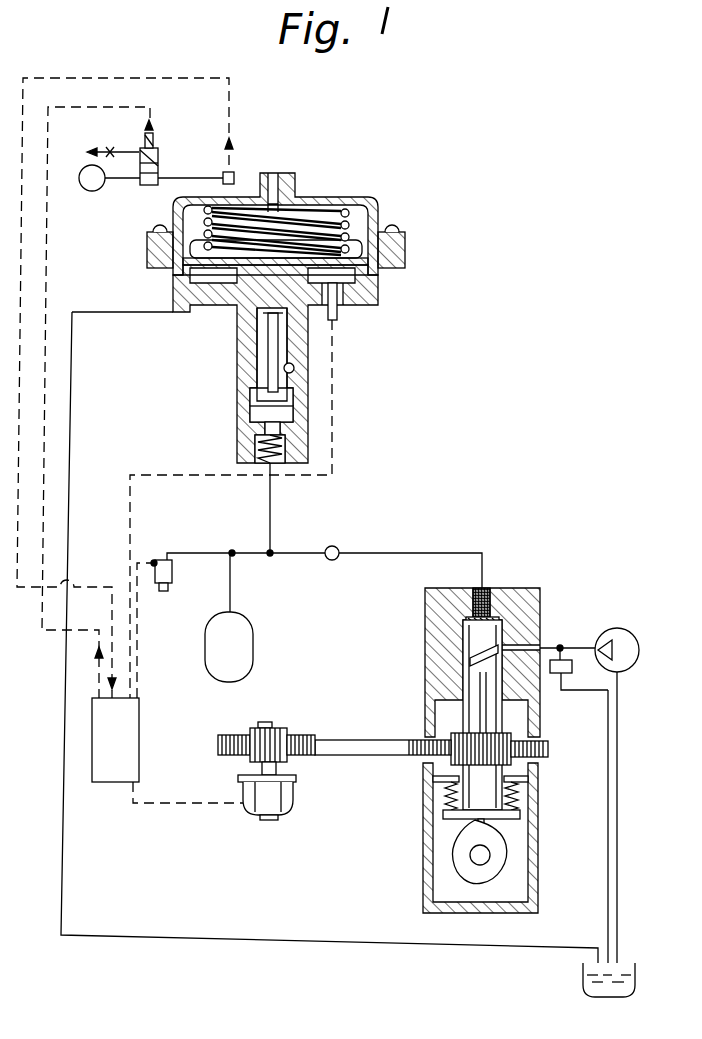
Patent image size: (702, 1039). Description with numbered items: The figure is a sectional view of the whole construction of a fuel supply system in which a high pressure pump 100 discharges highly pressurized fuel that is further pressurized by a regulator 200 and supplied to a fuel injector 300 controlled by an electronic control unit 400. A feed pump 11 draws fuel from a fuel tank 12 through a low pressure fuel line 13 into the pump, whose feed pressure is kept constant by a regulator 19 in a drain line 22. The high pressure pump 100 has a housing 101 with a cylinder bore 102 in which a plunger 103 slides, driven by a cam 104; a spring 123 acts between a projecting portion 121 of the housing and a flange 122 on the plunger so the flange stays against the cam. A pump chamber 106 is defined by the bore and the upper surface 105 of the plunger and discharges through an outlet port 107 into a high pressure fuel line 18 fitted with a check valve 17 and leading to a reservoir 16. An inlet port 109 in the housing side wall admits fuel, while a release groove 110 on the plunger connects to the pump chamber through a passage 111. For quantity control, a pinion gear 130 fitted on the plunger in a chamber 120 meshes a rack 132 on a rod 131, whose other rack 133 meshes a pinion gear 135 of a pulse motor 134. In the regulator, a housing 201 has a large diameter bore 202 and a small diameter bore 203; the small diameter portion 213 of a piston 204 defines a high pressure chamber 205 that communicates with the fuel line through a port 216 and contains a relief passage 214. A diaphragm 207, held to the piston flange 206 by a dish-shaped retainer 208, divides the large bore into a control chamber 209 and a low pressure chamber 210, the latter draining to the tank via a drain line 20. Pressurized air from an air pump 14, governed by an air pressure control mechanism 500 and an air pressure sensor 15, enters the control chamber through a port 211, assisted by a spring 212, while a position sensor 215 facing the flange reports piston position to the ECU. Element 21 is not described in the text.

The feed pump 11 is at (640, 640).
The fuel tank 12 is at (583, 980).
The low pressure fuel line 13 is at (609, 632).
The air pump 14 is at (90, 191).
The air pressure sensor 15 is at (222, 174).
The reservoir 16 is at (250, 664).
The check valve 17 is at (336, 547).
The high pressure fuel line 18 is at (402, 553).
The regulator 19 is at (572, 672).
The drain line 20 is at (70, 440).
The control valve 21 is at (160, 187).
The drain line 22 is at (618, 854).
The high pressure pump 100 is at (413, 713).
The housing 101 is at (540, 590).
The cylinder bore 102 is at (463, 668).
The plunger 103 is at (463, 638).
The cam 104 is at (507, 857).
The upper surface 105 is at (463, 606).
The pump chamber 106 is at (492, 616).
The outlet port 107 is at (481, 588).
The inlet port 109 is at (512, 643).
The release groove 110 is at (530, 608).
The passage 111 is at (455, 590).
The chamber 120 is at (433, 850).
The projecting portion 121 is at (445, 792).
The flange 122 is at (520, 814).
The spring 123 is at (518, 786).
The pinion gear 130 is at (513, 736).
The rod 131 is at (385, 756).
The rack 132 is at (549, 750).
The rack 133 is at (289, 764).
The pulse motor 134 is at (292, 812).
The pinion gear 135 is at (283, 728).
The regulator 200 is at (275, 344).
The housing 201 is at (380, 214).
The large diameter bore 202 is at (372, 242).
The small diameter bore 203 is at (284, 368).
The piston 204 is at (300, 342).
The high pressure chamber 205 is at (292, 415).
The flange 206 is at (173, 291).
The diaphragm 207 is at (380, 304).
The dish-shaped retainer 208 is at (380, 284).
The control chamber 209 is at (318, 205).
The low pressure chamber 210 is at (230, 302).
The port 211 is at (262, 176).
The spring 212 is at (350, 208).
The small diameter portion 213 is at (292, 392).
The relief passage 214 is at (262, 383).
The position sensor 215 is at (338, 318).
The port 216 is at (288, 452).
The fuel injector 300 is at (172, 572).
The electronic control unit 400 is at (138, 722).
The air pressure control mechanism 500 is at (159, 150).